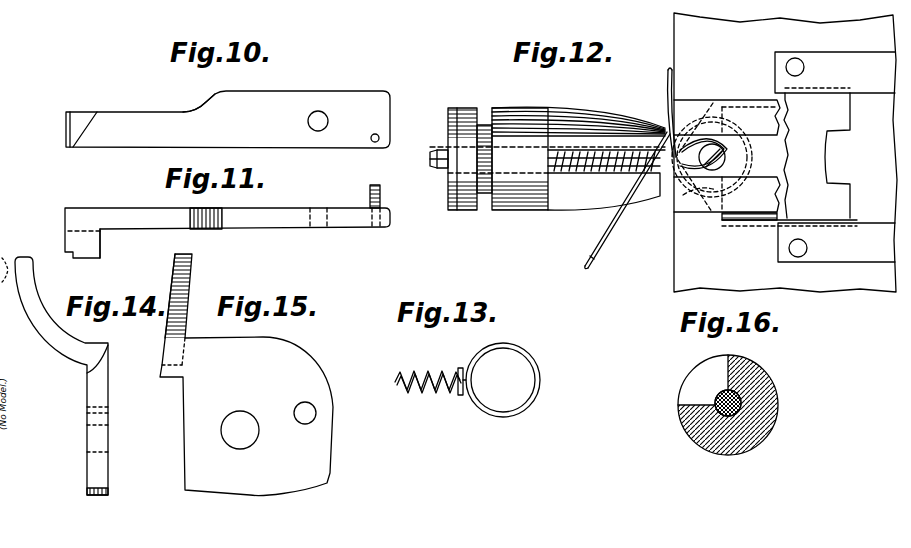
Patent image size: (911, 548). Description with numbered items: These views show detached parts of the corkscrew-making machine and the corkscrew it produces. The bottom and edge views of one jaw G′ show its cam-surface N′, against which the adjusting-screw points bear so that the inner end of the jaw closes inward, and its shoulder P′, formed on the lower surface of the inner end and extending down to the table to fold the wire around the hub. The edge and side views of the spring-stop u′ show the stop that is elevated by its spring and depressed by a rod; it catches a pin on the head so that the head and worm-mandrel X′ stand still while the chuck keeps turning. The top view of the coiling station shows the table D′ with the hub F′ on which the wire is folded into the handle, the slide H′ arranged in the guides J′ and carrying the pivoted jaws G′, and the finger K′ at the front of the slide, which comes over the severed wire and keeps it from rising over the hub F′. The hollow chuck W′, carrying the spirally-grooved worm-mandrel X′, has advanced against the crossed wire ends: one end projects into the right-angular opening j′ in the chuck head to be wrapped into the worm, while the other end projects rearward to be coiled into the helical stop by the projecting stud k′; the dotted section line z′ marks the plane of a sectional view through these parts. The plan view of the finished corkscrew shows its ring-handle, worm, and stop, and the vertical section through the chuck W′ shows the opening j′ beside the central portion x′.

In FIG. 10, the jaw G′ is at (228, 119).
In FIG. 11, the jaw G′ is at (227, 221).
In FIG. 12, the jaw G′ is at (727, 156).
In FIG. 10, the shoulder P′ is at (85, 129).
In FIG. 11, the shoulder P′ is at (84, 243).
In FIG. 10, the cam-surface N′ is at (199, 101).
In FIG. 11, the cam-surface N′ is at (206, 227).
In FIG. 14, the spring-stop u′ is at (55, 376).
In FIG. 15, the spring-stop u′ is at (246, 375).
In FIG. 13, the finger K′ is at (467, 380).
In FIG. 12, the finger K′ is at (712, 157).
In FIG. 12, the table D′ is at (785, 152).
In FIG. 12, the guides J′ is at (835, 157).
In FIG. 12, the slide H′ is at (789, 157).
In FIG. 12, the hub F′ is at (696, 159).
In FIG. 12, the projecting stud k′ is at (667, 122).
In FIG. 12, the worm-mandrel X′ is at (437, 171).
In FIG. 12, the hollow chuck W′ is at (547, 151).
In FIG. 16, the hollow chuck W′ is at (779, 402).
In FIG. 12, the dotted section line z′ is at (600, 213).
In FIG. 12, the right-angular opening j′ is at (606, 180).
In FIG. 16, the right-angular opening j′ is at (703, 380).
In FIG. 16, the core x′ is at (739, 411).